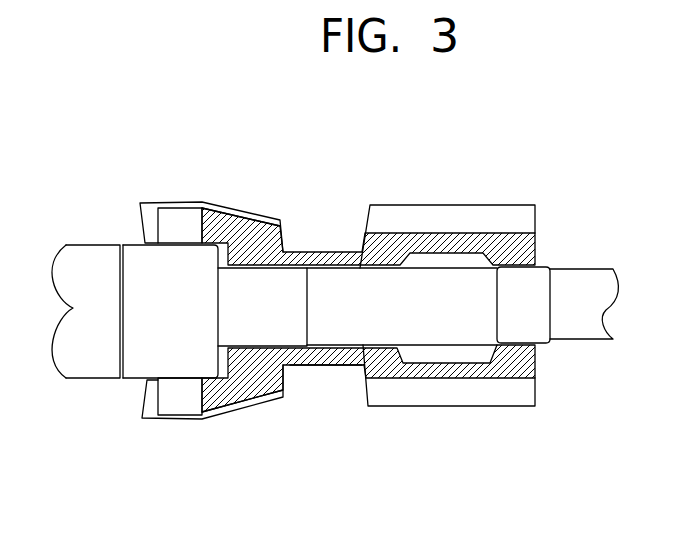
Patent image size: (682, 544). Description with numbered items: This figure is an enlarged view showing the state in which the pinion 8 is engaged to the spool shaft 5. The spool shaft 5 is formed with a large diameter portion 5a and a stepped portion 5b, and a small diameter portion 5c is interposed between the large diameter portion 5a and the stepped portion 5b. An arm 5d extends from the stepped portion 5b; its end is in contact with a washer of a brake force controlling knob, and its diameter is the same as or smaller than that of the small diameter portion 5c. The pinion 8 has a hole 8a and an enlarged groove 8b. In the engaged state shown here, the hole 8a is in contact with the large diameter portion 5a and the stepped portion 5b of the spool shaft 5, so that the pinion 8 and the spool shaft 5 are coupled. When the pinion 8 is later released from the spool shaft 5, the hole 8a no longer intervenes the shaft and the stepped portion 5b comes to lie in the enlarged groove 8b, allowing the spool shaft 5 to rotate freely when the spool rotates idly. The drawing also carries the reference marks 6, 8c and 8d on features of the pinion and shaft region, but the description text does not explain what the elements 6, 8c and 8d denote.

The spool shaft 5 is at (168, 315).
The large diameter portion 5a is at (256, 322).
The stepped portion 5b is at (540, 263).
The small diameter portion 5c is at (437, 325).
The arm 5d is at (585, 290).
The seal ring 6 is at (178, 396).
The pinion 8 is at (257, 198).
The hole 8a is at (331, 270).
The enlarged groove 8b is at (423, 262).
The groove 8c is at (147, 214).
The sleeve wall 8d is at (333, 372).